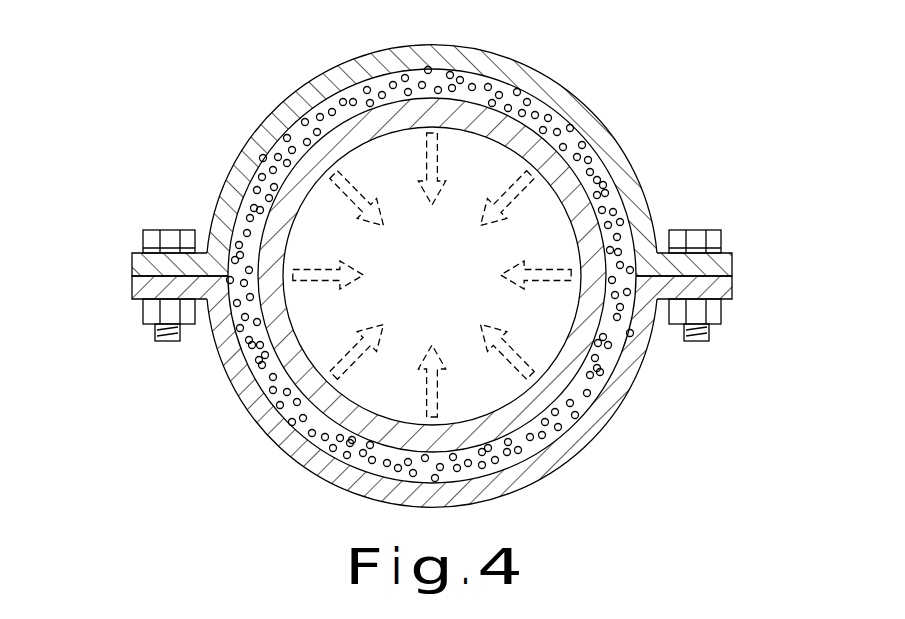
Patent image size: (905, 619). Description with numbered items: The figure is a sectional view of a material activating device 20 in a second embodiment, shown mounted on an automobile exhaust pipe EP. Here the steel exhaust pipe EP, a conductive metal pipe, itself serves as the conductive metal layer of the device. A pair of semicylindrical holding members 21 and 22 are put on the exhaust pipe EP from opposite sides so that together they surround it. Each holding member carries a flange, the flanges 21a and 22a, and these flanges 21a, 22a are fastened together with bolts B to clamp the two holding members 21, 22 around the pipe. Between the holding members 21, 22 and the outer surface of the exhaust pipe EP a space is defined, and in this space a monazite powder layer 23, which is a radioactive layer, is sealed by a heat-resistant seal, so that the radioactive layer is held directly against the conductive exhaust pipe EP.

The material activating device 20 is at (199, 112).
The semicylindrical holding member 21 is at (578, 83).
The semicylindrical holding member 22 is at (585, 447).
The flange 21a is at (138, 268).
The flange 22a is at (138, 286).
The monazite powder layer 23 is at (608, 160).
The exhaust pipe EP is at (378, 100).
The bolt B is at (162, 232).